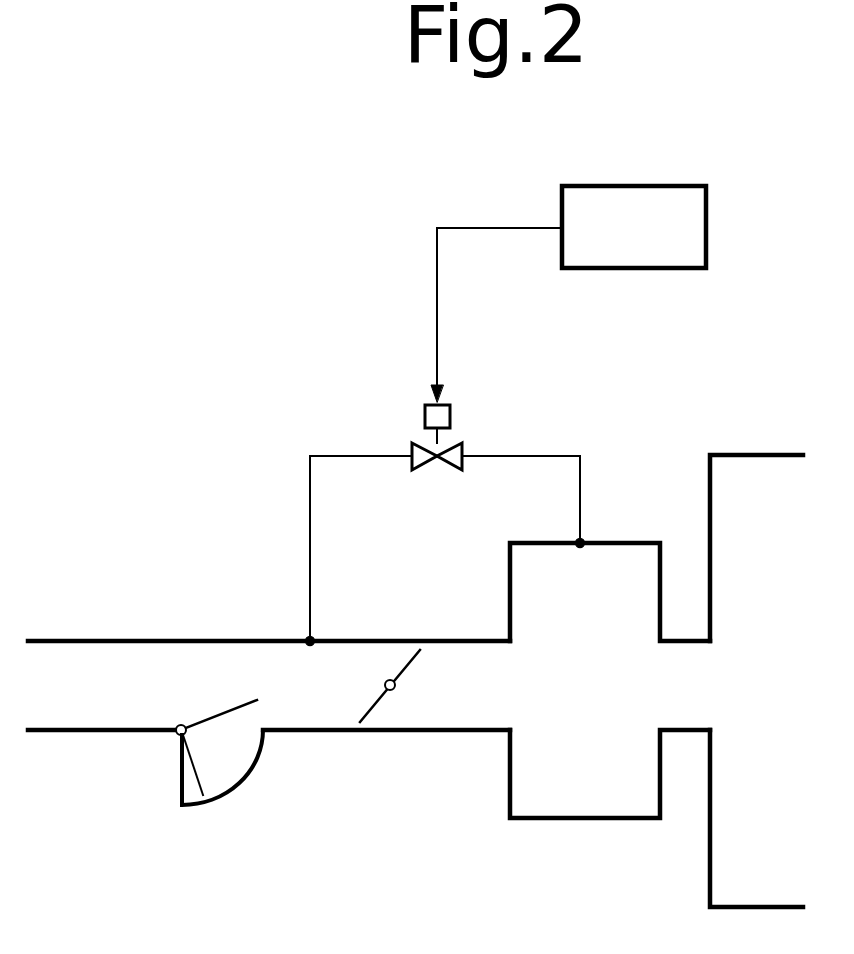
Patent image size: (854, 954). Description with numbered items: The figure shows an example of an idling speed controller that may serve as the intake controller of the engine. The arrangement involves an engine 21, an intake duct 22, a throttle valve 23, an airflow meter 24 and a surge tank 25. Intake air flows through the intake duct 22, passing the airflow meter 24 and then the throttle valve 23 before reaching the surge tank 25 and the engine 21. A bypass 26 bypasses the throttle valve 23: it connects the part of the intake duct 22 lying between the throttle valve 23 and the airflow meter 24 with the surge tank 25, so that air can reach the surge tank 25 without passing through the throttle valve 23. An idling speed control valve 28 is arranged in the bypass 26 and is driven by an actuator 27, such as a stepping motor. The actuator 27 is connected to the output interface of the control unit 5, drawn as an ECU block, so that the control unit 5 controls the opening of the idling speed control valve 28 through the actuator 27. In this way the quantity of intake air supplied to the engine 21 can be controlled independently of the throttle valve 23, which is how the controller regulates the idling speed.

The control unit 5 is at (637, 185).
The engine 21 is at (774, 454).
The intake duct 22 is at (64, 718).
The throttle valve 23 is at (379, 705).
The airflow meter 24 is at (245, 780).
The surge tank 25 is at (577, 820).
The bypass 26 is at (568, 455).
The actuator 27 is at (452, 416).
The idling speed control valve 28 is at (452, 468).